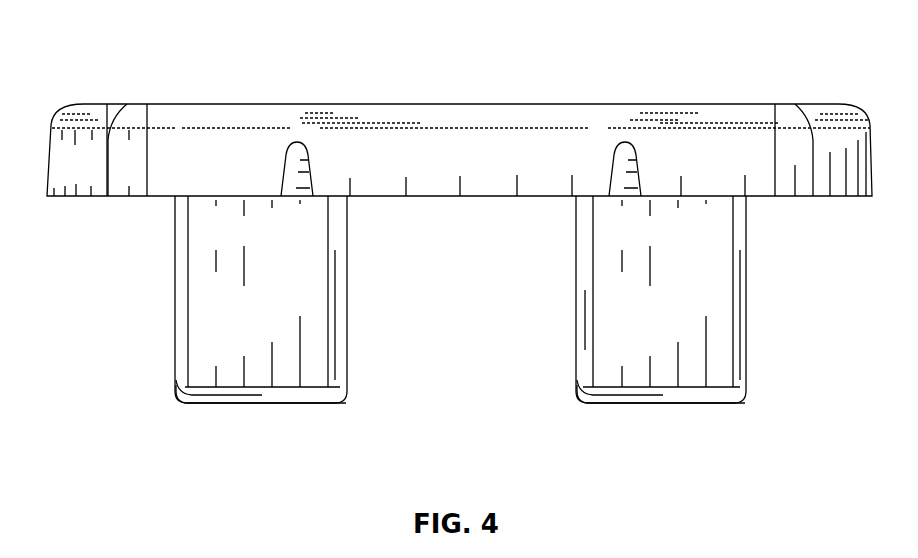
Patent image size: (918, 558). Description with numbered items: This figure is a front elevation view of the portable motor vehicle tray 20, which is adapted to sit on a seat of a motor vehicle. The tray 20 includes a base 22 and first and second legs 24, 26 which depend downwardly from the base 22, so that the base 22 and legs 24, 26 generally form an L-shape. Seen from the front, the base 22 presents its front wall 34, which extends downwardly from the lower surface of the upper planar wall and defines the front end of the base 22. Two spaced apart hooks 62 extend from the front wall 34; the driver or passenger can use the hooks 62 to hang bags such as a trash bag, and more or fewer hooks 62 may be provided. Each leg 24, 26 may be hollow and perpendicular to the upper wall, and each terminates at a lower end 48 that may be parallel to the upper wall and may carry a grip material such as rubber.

The motor vehicle tray 20 is at (464, 243).
The base 22 is at (459, 117).
The front wall 34 is at (467, 150).
The hooks 62 is at (297, 142).
The second leg 26 is at (175, 280).
The first leg 24 is at (748, 310).
The lower end 48 is at (258, 405).